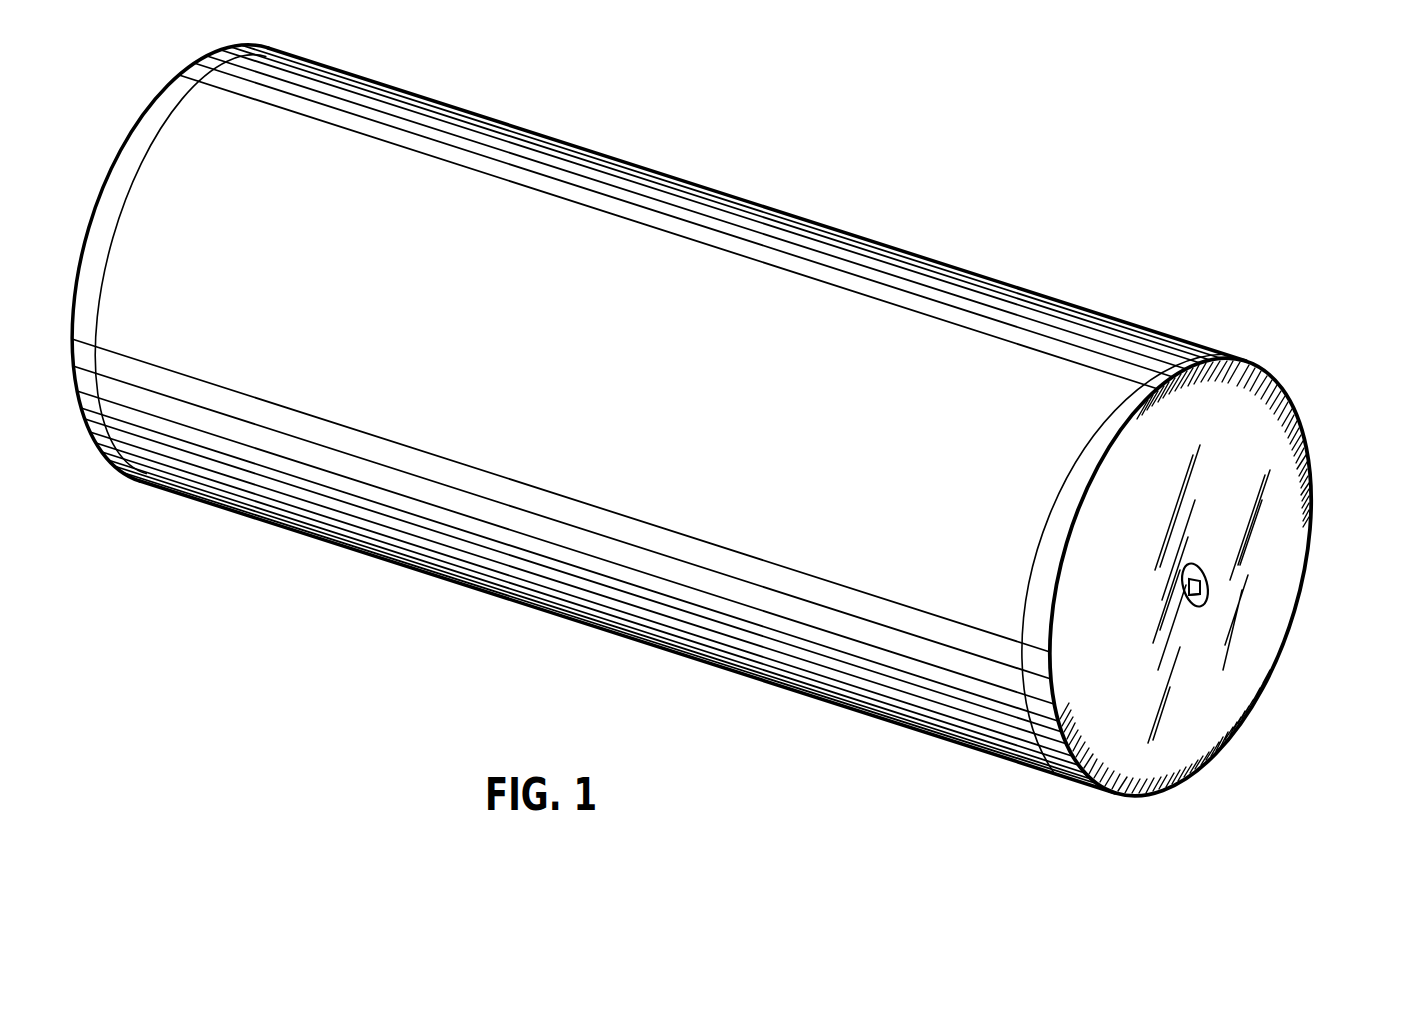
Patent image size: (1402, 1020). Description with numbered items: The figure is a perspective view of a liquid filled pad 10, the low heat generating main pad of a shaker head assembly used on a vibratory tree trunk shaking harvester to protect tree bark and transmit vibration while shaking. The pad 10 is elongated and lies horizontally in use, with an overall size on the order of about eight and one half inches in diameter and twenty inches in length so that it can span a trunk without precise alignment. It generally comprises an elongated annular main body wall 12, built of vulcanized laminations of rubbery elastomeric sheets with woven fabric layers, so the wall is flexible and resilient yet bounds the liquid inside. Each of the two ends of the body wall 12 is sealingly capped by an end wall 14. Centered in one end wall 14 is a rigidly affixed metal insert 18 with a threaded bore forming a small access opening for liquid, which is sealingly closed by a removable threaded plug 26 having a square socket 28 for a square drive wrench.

The liquid filled pad 10 is at (732, 185).
The main body wall 12 is at (995, 284).
The end wall 14 is at (123, 152).
The metal insert 18 is at (1203, 567).
The threaded plug 26 is at (1190, 607).
The square socket 28 is at (1203, 593).